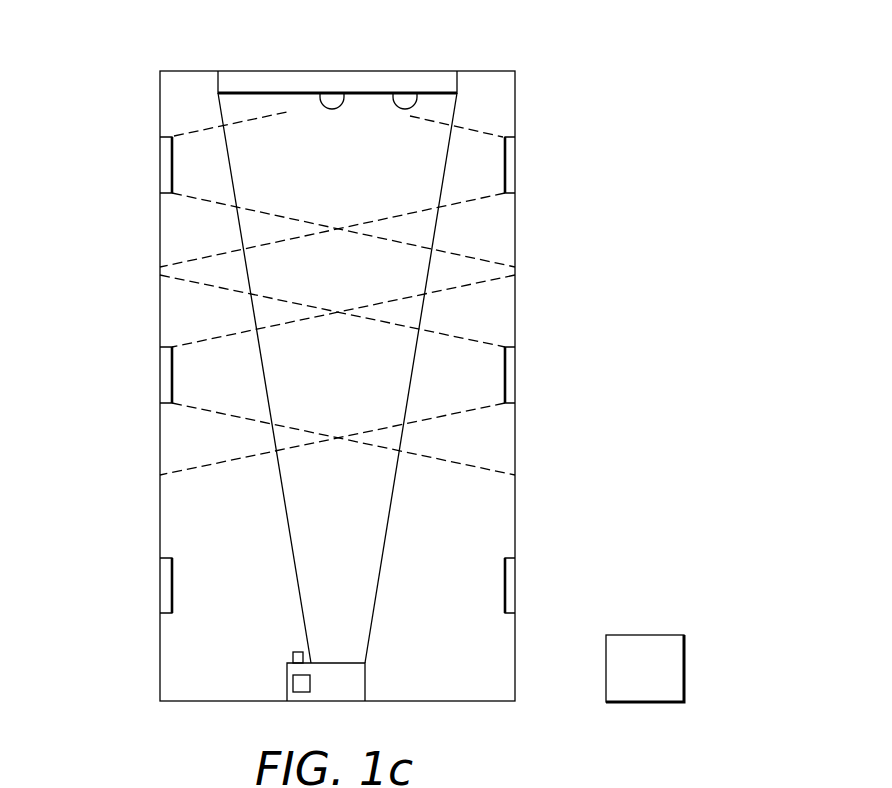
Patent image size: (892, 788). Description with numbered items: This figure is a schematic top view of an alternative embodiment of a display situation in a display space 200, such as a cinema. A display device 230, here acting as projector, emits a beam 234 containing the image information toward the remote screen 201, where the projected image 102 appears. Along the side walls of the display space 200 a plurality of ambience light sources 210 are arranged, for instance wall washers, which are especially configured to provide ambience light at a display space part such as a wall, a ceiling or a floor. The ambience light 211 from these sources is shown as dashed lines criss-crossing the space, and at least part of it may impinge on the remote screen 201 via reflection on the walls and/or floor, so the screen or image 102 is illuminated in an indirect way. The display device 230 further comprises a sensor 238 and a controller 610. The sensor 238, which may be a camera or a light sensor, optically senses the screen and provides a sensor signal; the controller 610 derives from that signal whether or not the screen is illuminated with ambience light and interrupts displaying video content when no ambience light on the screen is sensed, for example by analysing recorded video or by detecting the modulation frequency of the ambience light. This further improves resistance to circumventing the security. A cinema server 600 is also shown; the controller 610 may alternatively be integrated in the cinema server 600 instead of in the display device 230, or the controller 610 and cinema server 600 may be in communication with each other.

The display space 200 is at (626, 122).
The remote screen 201 is at (342, 93).
The image 102 is at (416, 93).
The ambience light 211 is at (198, 155).
The ambience light sources 210 is at (165, 385).
The beam 234 is at (350, 605).
The display device 230 is at (335, 695).
The sensor 238 is at (292, 660).
The controller 610 is at (292, 687).
The cinema server 600 is at (733, 682).